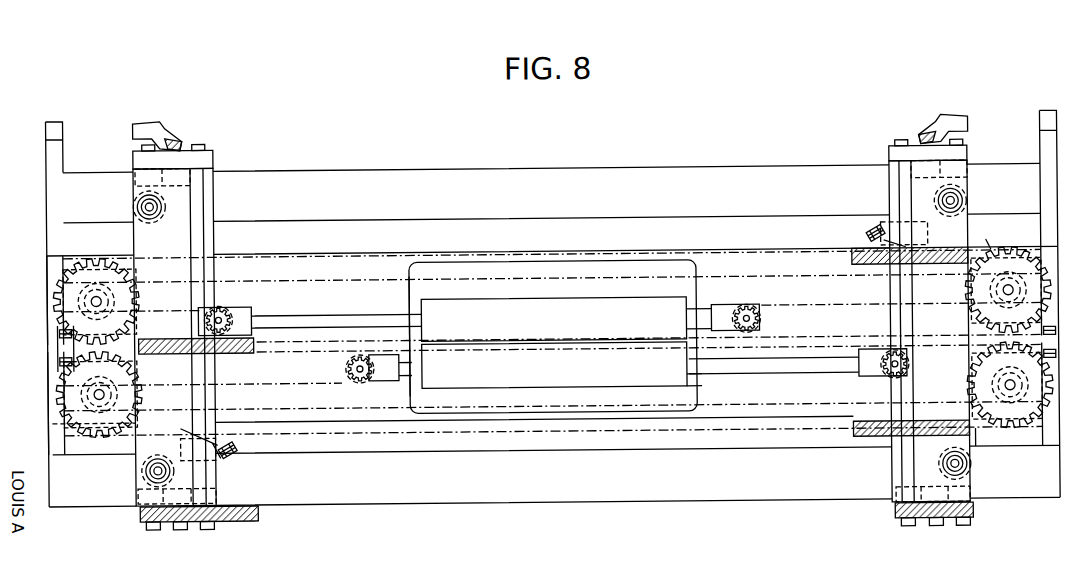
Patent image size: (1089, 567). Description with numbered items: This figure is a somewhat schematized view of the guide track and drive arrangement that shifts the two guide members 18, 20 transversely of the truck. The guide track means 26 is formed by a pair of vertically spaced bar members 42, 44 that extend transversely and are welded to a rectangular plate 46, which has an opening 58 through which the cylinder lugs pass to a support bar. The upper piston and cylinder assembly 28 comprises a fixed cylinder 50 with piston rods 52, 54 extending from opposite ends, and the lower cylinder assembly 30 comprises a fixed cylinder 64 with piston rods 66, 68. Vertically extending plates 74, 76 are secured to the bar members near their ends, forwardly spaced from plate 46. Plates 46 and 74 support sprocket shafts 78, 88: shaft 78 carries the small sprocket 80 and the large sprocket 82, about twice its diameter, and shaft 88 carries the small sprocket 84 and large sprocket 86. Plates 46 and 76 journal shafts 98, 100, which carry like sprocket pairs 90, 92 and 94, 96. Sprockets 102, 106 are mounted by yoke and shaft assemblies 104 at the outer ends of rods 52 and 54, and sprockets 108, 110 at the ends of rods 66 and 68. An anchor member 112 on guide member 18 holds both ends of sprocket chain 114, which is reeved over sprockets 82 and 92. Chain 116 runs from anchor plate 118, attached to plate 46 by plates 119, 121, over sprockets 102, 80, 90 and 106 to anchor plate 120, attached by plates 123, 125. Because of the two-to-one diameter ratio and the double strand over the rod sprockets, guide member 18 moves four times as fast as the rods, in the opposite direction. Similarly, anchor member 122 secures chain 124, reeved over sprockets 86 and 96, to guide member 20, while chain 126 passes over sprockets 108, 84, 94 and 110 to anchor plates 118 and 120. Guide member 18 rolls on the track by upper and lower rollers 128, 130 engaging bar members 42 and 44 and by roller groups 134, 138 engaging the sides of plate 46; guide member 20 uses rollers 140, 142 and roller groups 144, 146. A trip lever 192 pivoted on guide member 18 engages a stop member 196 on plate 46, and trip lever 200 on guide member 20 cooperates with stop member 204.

The guide member 18 is at (884, 151).
The guide member 20 is at (225, 164).
The guide track means 26 is at (564, 171).
The piston and cylinder assembly 28 is at (613, 294).
The cylinder assembly 30 is at (698, 392).
The bar member 42 is at (277, 227).
The bar member 44 is at (361, 454).
The rectangular plate 46 is at (405, 178).
The fixed cylinder 50 is at (562, 325).
The piston rod 52 is at (698, 313).
The piston rod 54 is at (327, 318).
The opening 58 is at (408, 287).
The fixed cylinder 64 is at (563, 376).
The piston rod 66 is at (797, 368).
The piston rod 68 is at (405, 380).
The plate 74 is at (1030, 252).
The plate 76 is at (70, 265).
The sprocket shaft 78 is at (1002, 296).
The relatively small sprocket 80 is at (970, 285).
The relatively large sprocket 82 is at (986, 248).
The relatively small sprocket 84 is at (975, 424).
The relatively large sprocket 86 is at (1012, 440).
The sprocket shaft 88 is at (1002, 392).
The sprocket 90 is at (45, 278).
The sprocket 92 is at (96, 262).
The sprocket 94 is at (56, 375).
The sprocket 96 is at (56, 393).
The shaft 98 is at (90, 302).
The shaft 100 is at (92, 396).
The sprocket 102 is at (762, 320).
The yoke and shaft assembly 104 is at (252, 311).
The sprocket 106 is at (215, 312).
The sprocket 108 is at (888, 378).
The sprocket 110 is at (352, 382).
The anchor member 112 is at (880, 228).
The sprocket chain 114 is at (800, 254).
The sprocket chain 116 is at (154, 312).
The anchor plate 118 is at (1054, 340).
The plate 119 is at (1048, 256).
The anchor plate 120 is at (58, 347).
The plate 121 is at (1048, 418).
The anchor member 122 is at (228, 462).
The plate 123 is at (48, 265).
The sprocket chain 124 is at (292, 436).
The plate 125 is at (50, 425).
The sprocket chain 126 is at (275, 410).
The upper roller 128 is at (967, 205).
The lower roller 130 is at (970, 469).
The upper group of rollers 134 is at (955, 172).
The lower group of rollers 138 is at (975, 502).
The roller 140 is at (134, 206).
The roller 142 is at (140, 470).
The roller group 144 is at (142, 178).
The roller group 146 is at (132, 510).
The trip lever 192 is at (943, 124).
The stop member 196 is at (1043, 122).
The trip lever 200 is at (155, 130).
The stop member 204 is at (48, 130).